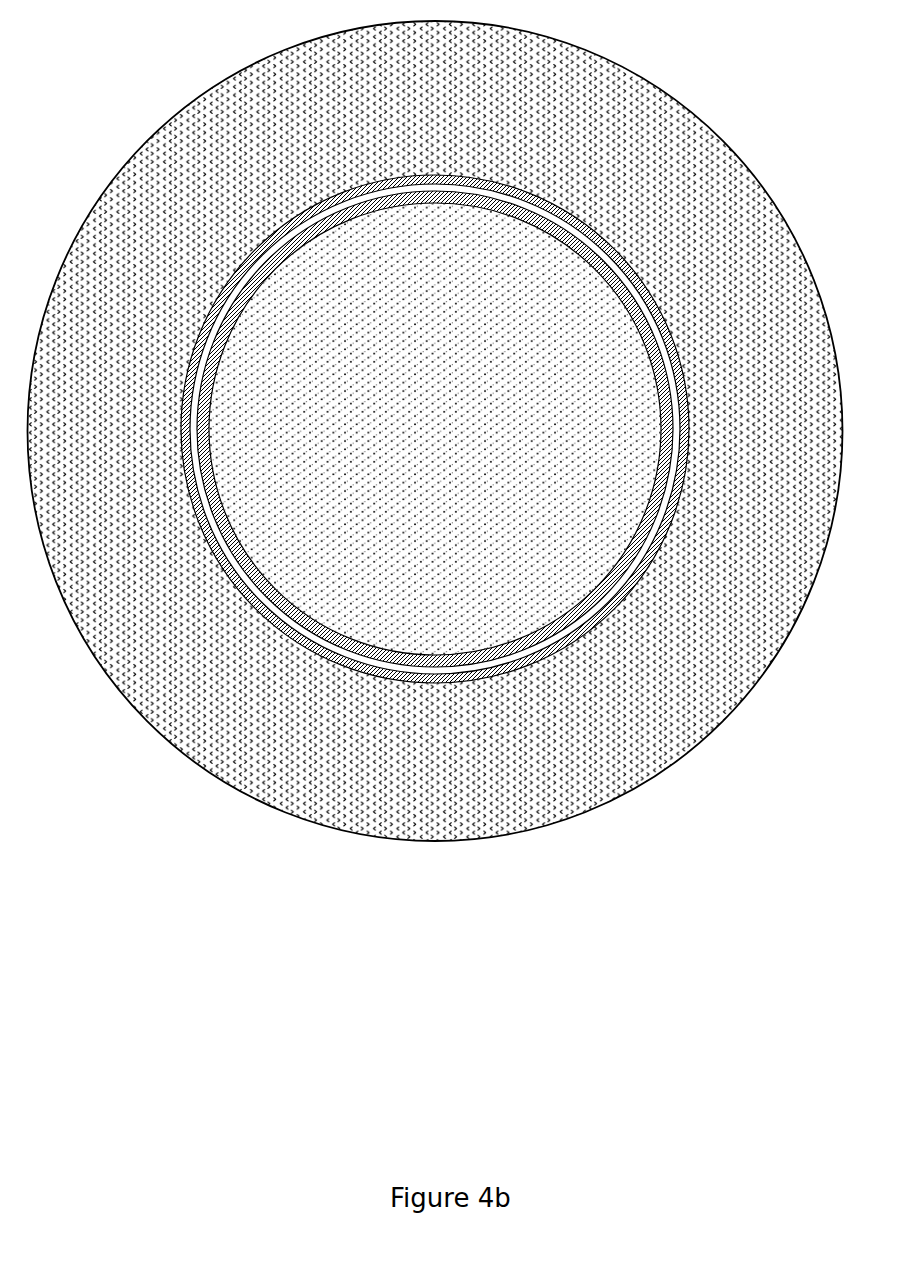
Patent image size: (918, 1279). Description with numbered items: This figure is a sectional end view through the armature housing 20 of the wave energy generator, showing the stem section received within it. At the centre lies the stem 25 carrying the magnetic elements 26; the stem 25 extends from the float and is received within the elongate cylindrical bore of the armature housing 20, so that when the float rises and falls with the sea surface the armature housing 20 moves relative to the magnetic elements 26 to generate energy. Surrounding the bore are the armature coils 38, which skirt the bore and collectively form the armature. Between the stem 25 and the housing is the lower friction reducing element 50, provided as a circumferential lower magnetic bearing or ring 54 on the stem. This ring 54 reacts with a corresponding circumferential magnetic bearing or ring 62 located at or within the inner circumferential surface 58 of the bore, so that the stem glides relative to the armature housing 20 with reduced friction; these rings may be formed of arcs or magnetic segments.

The armature housing 20 is at (137, 717).
The armature coils 38 is at (313, 722).
The magnetic bearing or ring 62 is at (580, 220).
The inner circumferential surface 58 is at (520, 672).
The lower friction reducing element 50 is at (435, 429).
The lower magnetic bearing or ring 54 is at (660, 390).
The stem 25 is at (435, 429).
The magnetic elements 26 is at (482, 429).